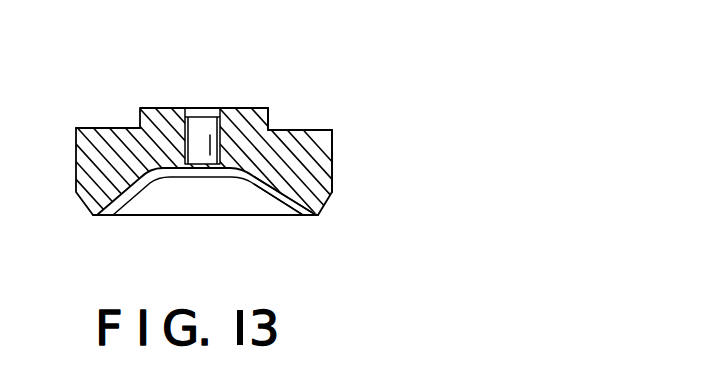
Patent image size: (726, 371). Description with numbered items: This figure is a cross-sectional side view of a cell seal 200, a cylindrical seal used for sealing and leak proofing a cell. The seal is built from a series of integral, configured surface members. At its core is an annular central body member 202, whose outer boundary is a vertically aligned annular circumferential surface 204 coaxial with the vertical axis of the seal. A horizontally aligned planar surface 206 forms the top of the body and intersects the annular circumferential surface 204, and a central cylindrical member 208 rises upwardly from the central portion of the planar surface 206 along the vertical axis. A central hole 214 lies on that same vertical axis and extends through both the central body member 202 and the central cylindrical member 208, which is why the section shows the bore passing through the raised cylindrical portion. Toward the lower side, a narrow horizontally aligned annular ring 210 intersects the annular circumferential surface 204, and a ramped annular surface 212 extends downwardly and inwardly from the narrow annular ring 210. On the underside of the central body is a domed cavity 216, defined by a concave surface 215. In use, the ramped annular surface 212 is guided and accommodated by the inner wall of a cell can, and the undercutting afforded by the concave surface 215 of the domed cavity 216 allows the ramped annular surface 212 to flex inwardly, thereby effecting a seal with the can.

The cell seal 200 is at (380, 160).
The annular central body member 202 is at (306, 134).
The annular circumferential surface 204 is at (332, 147).
The planar surface 206 is at (104, 128).
The central cylindrical member 208 is at (247, 116).
The narrow annular ring 210 is at (329, 192).
The ramped annular surface 212 is at (320, 213).
The central hole 214 is at (197, 130).
The concave surface 215 is at (284, 205).
The domed cavity 216 is at (162, 200).